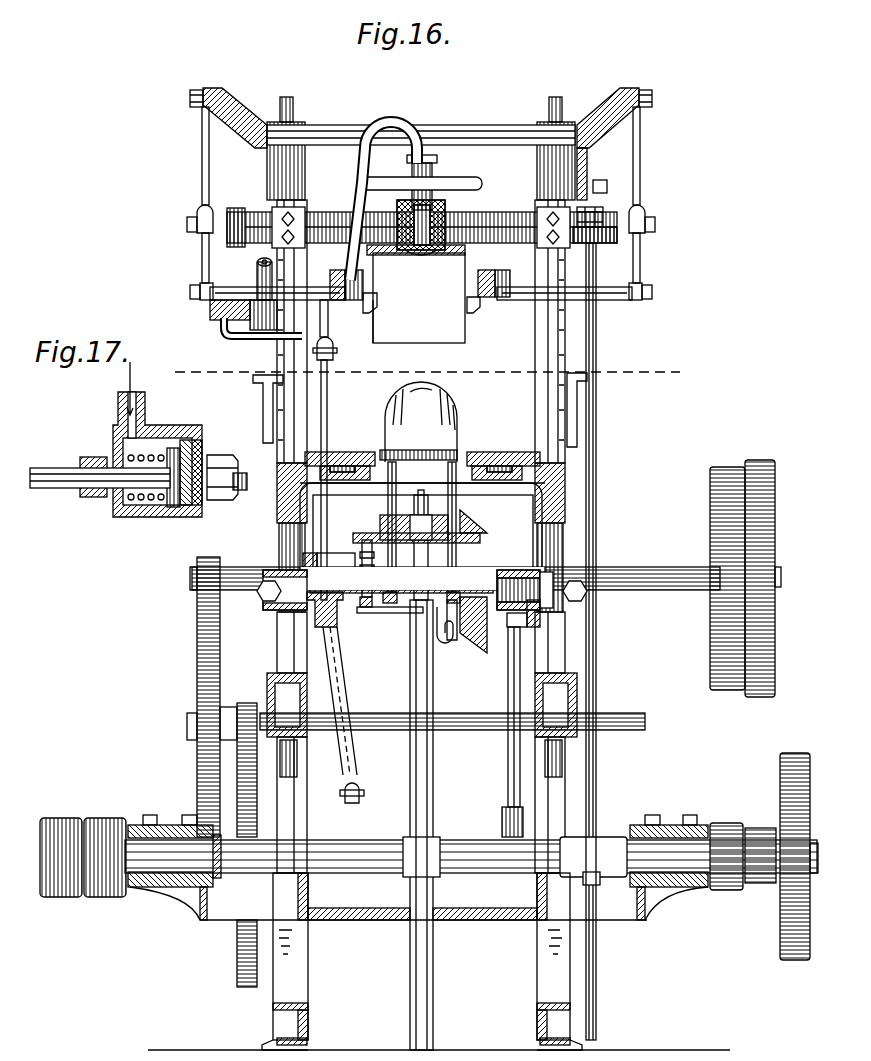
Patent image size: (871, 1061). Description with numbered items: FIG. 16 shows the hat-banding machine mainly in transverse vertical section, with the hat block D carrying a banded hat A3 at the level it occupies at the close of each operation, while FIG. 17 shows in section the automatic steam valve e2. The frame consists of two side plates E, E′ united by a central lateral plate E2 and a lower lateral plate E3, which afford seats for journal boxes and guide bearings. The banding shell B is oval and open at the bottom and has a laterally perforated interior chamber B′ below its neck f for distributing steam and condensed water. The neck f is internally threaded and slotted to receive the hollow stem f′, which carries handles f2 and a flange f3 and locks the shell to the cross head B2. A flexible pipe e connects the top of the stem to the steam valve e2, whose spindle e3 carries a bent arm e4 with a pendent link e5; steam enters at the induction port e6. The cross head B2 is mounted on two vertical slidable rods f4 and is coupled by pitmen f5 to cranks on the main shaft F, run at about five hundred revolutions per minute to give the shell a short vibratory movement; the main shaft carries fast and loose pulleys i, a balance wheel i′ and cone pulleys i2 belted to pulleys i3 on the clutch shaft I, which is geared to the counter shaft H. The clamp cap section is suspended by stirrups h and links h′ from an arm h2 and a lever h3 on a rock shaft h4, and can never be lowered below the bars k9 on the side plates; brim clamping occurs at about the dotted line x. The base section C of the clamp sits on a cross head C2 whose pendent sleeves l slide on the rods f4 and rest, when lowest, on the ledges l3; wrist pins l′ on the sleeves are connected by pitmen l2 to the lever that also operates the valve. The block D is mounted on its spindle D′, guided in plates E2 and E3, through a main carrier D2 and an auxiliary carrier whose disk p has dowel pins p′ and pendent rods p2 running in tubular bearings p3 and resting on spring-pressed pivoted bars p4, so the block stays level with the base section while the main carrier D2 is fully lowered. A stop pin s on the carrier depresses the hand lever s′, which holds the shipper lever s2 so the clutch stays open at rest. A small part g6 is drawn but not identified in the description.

In FIG. 16, the arm h2 is at (212, 88).
In FIG. 16, the vertical slidable rods f4 is at (284, 97).
In FIG. 16, the rock shaft h4 is at (331, 128).
In FIG. 16, the flexible pipe e is at (393, 126).
In FIG. 16, the handles f2 is at (437, 207).
In FIG. 16, the flange f3 is at (447, 223).
In FIG. 16, the cross head B2 is at (497, 215).
In FIG. 16, the lever h3 is at (582, 117).
In FIG. 16, the links h′ is at (203, 163).
In FIG. 16, the hollow stem f′ is at (393, 210).
In FIG. 16, the neck f is at (450, 220).
In FIG. 16, the stirrups or angular plates h is at (202, 262).
In FIG. 16, the induction port e6 is at (257, 270).
In FIG. 17, the induction port e6 is at (120, 412).
In FIG. 16, the interior chamber B′ is at (416, 294).
In FIG. 16, the lug g6 is at (478, 306).
In FIG. 16, the spindle e3 is at (215, 318).
In FIG. 17, the spindle e3 is at (72, 473).
In FIG. 16, the bent arm e4 is at (228, 332).
In FIG. 16, the steam valve e2 is at (262, 326).
In FIG. 17, the steam valve e2 is at (182, 440).
In FIG. 16, the banding shell B is at (376, 317).
In FIG. 16, the banded hat A3 is at (437, 382).
In FIG. 16, the dotted line x is at (427, 369).
In FIG. 16, the laterally projecting bars k9 is at (623, 394).
In FIG. 16, the pendent link e5 is at (326, 384).
In FIG. 16, the hat block D is at (421, 422).
In FIG. 16, the disk p is at (403, 457).
In FIG. 16, the main carrier D2 is at (437, 520).
In FIG. 16, the base section C is at (512, 450).
In FIG. 16, the pitmen f5 is at (597, 447).
In FIG. 16, the cross head C2 is at (513, 477).
In FIG. 16, the pulleys i3 is at (745, 562).
In FIG. 16, the pendent sleeves l is at (277, 493).
In FIG. 16, the wrist pins l′ is at (513, 590).
In FIG. 16, the pendent rods p2 is at (388, 502).
In FIG. 16, the dowel pins p′ is at (410, 507).
In FIG. 16, the tubular guide bearings p3 is at (380, 533).
In FIG. 16, the lateral plate E2 is at (337, 568).
In FIG. 16, the stop pin s is at (353, 577).
In FIG. 16, the clutch shaft I is at (643, 583).
In FIG. 16, the bars l3 is at (307, 627).
In FIG. 16, the hand lever s′ is at (368, 604).
In FIG. 16, the pivoted horizontal bars p4 is at (388, 603).
In FIG. 16, the rock shaft or shipper lever s2 is at (400, 612).
In FIG. 16, the links or pitmen l2 is at (338, 712).
In FIG. 16, the counter shaft H is at (488, 720).
In FIG. 16, the block spindle D′ is at (418, 800).
In FIG. 16, the fast and loose pulleys i is at (83, 841).
In FIG. 16, the lateral plate E3 is at (423, 898).
In FIG. 16, the cone pulleys i2 is at (743, 840).
In FIG. 16, the balance wheel i′ is at (799, 842).
In FIG. 16, the side plate E′ is at (303, 958).
In FIG. 16, the main shaft F is at (485, 860).
In FIG. 16, the side plate E is at (548, 938).